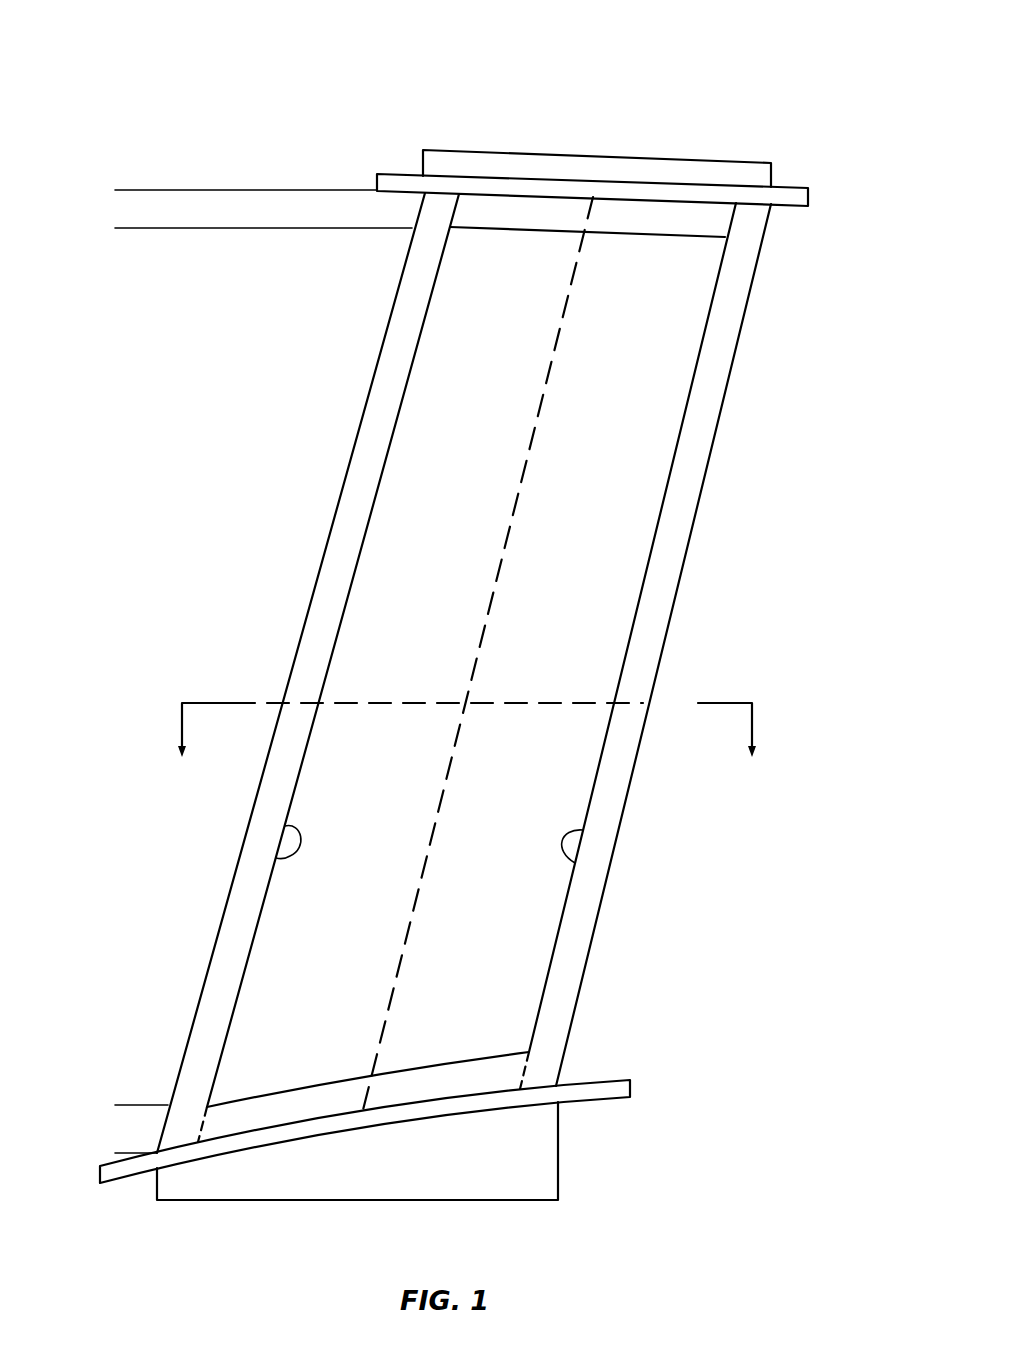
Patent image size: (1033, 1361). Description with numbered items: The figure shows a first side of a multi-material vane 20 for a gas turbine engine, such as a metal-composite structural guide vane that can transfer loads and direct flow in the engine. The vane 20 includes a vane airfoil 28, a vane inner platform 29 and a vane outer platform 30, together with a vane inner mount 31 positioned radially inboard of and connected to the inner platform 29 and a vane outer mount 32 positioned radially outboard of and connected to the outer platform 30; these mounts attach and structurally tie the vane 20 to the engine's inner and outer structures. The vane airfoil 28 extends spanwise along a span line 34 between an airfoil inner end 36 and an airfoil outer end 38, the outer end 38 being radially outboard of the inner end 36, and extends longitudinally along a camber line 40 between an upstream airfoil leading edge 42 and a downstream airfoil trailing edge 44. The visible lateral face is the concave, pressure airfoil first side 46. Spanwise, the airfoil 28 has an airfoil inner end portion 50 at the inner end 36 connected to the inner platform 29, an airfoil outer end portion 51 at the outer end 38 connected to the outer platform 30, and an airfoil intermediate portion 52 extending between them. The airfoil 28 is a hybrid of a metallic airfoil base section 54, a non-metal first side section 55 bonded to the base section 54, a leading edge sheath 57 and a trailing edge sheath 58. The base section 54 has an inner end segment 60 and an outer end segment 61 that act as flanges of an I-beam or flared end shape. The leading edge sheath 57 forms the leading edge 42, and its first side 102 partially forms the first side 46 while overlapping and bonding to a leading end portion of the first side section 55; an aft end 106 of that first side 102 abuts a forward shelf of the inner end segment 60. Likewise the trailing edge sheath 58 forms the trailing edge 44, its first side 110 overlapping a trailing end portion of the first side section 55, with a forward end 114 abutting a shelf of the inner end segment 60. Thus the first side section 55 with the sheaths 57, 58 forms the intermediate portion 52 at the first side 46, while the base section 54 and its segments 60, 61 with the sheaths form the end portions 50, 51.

The multi-material vane 20 is at (464, 627).
The vane airfoil 28 is at (494, 673).
The vane inner platform 29 is at (655, 1083).
The vane outer platform 30 is at (835, 191).
The vane inner mount 31 is at (577, 1167).
The vane outer mount 32 is at (750, 152).
The span line 34 is at (523, 483).
The airfoil inner end 36 is at (233, 1140).
The airfoil outer end 38 is at (503, 193).
The camber line 40 is at (533, 705).
The airfoil leading edge 42 is at (289, 673).
The airfoil trailing edge 44 is at (662, 646).
The airfoil first side 46 is at (283, 973).
The airfoil inner end portion 50 is at (115, 1105).
The airfoil outer end portion 51 is at (115, 190).
The airfoil intermediate portion 52 is at (115, 228).
The airfoil base section 54 is at (573, 194).
The first side section 55 is at (351, 540).
The leading edge sheath 57 is at (337, 459).
The trailing edge sheath 58 is at (708, 494).
The inner end segment 60 is at (307, 1124).
The outer end segment 61 is at (632, 194).
The first side of leading edge sheath 102 is at (243, 885).
The aft end of leading edge sheath first side 106 is at (285, 826).
The first side of trailing edge sheath 110 is at (610, 797).
The forward end of trailing edge sheath first side 114 is at (575, 863).